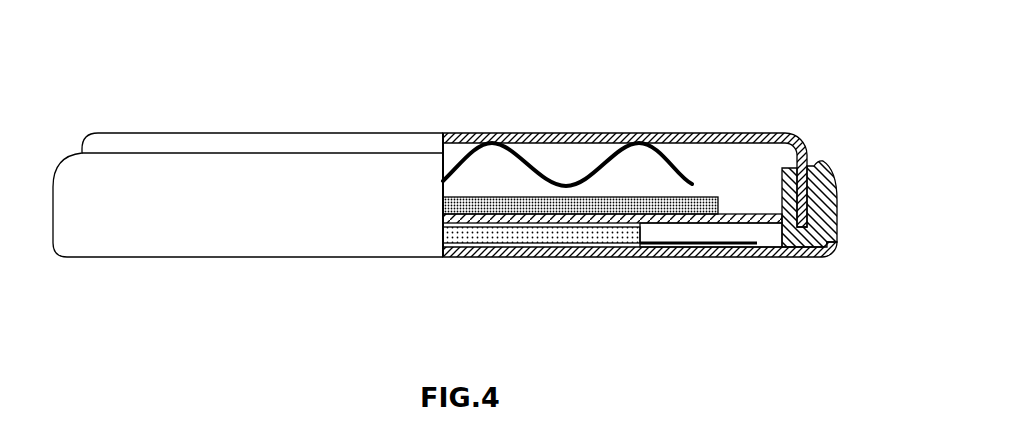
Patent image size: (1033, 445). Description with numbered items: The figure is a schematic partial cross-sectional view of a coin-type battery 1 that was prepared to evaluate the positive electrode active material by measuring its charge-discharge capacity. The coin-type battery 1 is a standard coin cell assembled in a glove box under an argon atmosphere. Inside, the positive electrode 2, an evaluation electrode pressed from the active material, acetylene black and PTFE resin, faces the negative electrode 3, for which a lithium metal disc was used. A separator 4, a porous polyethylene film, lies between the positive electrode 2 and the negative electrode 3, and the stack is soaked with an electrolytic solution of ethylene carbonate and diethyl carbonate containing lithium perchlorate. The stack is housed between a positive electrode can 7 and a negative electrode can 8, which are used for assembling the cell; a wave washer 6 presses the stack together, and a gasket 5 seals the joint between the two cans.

The coin-type battery 1 is at (219, 87).
The positive electrode 2 is at (594, 258).
The negative electrode 3 is at (714, 186).
The separator 4 is at (752, 213).
The gasket 5 is at (818, 213).
The wave washer 6 is at (536, 152).
The positive electrode can 7 is at (489, 258).
The negative electrode can 8 is at (466, 132).